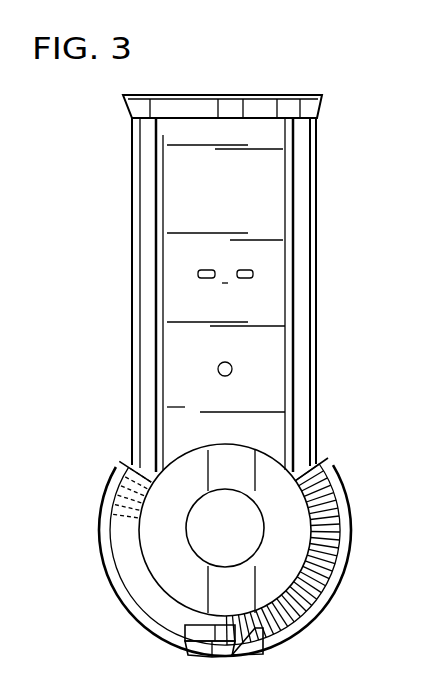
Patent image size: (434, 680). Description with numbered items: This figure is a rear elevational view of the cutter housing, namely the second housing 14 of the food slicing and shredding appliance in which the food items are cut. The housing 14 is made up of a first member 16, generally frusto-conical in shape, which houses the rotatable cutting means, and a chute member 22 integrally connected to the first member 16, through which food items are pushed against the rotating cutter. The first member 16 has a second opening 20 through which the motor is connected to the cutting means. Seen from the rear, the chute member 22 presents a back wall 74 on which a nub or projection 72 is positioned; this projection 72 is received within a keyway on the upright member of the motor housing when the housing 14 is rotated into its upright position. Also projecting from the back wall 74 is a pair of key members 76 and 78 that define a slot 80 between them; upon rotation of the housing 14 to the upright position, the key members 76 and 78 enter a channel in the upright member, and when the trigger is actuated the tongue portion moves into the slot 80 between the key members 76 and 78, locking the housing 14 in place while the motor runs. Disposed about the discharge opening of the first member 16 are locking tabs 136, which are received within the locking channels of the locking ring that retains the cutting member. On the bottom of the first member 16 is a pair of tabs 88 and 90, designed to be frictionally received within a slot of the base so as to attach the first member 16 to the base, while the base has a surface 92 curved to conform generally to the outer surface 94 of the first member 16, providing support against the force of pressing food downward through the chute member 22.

The second housing 14 is at (322, 203).
The chute member 22 is at (141, 210).
The back wall 74 is at (185, 342).
The key member 76 is at (198, 276).
The key member 78 is at (253, 271).
The slot 80 is at (225, 285).
The projection 72 is at (232, 366).
The second opening 20 is at (257, 508).
The first member 16 is at (322, 512).
The locking tabs 136 is at (330, 602).
The outer surface 94 is at (352, 556).
The tab 88 is at (268, 646).
The surface 92 is at (222, 624).
The tab 90 is at (188, 641).